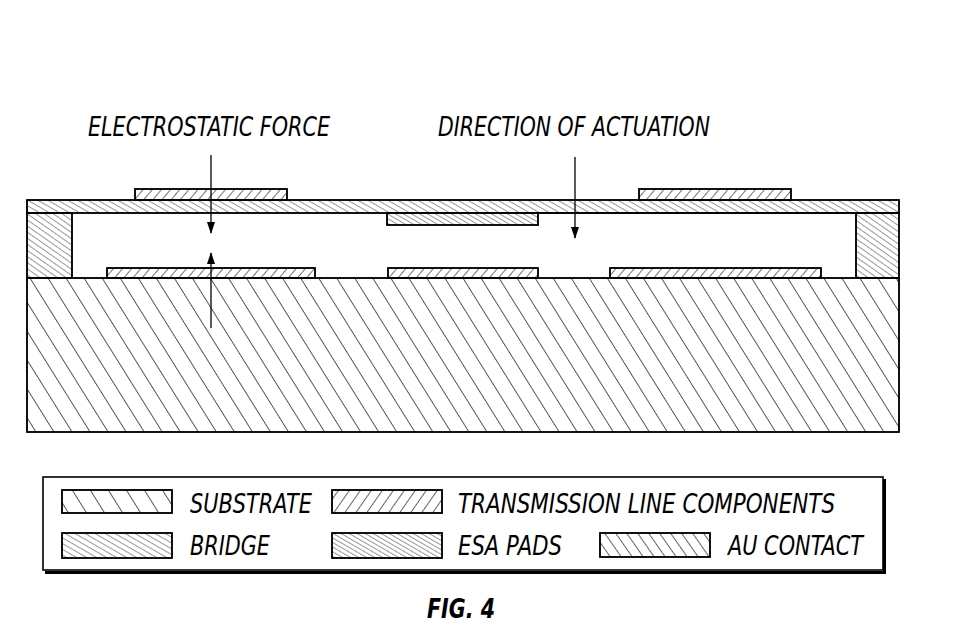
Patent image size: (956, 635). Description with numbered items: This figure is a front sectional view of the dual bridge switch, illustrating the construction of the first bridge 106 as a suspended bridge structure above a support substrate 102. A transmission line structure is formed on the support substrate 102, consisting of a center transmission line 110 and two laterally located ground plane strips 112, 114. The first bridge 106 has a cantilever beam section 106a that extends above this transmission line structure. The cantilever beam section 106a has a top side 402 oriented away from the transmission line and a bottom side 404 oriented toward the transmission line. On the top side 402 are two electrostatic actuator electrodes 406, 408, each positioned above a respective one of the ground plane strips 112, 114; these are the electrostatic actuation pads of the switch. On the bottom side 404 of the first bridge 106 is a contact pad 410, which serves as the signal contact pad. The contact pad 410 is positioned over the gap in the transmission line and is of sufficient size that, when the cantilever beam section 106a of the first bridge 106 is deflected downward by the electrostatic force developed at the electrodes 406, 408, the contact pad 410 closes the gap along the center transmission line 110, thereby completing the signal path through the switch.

The first bridge 106 is at (136, 68).
The cantilever beam section 106a is at (903, 200).
The support substrate 102 is at (98, 405).
The top side 402 is at (360, 200).
The bottom side 404 is at (726, 208).
The electrostatic actuator electrode 406 is at (160, 196).
The electrostatic actuator electrode 408 is at (716, 190).
The contact pad 410 is at (477, 225).
The center transmission line 110 is at (433, 268).
The ground plane strip 112 is at (150, 268).
The ground plane strip 114 is at (666, 268).